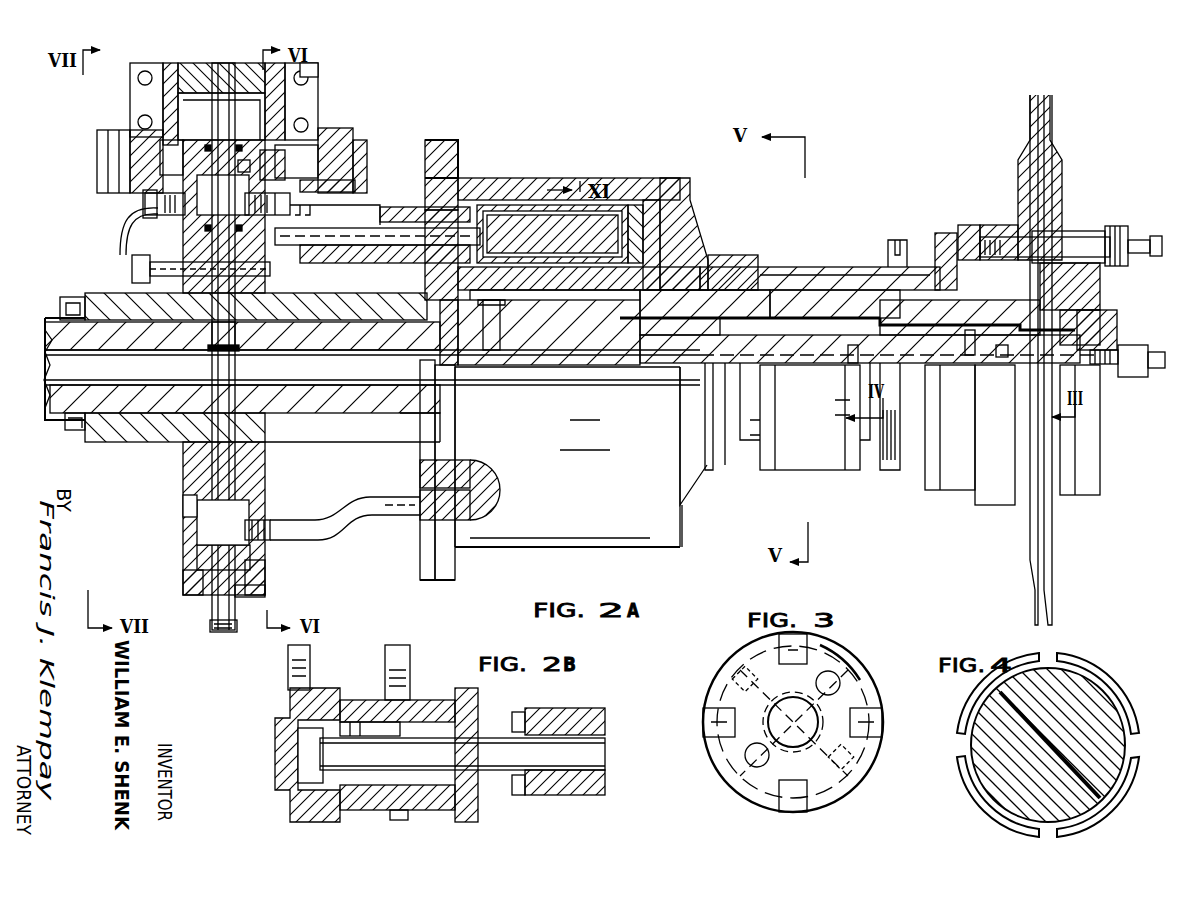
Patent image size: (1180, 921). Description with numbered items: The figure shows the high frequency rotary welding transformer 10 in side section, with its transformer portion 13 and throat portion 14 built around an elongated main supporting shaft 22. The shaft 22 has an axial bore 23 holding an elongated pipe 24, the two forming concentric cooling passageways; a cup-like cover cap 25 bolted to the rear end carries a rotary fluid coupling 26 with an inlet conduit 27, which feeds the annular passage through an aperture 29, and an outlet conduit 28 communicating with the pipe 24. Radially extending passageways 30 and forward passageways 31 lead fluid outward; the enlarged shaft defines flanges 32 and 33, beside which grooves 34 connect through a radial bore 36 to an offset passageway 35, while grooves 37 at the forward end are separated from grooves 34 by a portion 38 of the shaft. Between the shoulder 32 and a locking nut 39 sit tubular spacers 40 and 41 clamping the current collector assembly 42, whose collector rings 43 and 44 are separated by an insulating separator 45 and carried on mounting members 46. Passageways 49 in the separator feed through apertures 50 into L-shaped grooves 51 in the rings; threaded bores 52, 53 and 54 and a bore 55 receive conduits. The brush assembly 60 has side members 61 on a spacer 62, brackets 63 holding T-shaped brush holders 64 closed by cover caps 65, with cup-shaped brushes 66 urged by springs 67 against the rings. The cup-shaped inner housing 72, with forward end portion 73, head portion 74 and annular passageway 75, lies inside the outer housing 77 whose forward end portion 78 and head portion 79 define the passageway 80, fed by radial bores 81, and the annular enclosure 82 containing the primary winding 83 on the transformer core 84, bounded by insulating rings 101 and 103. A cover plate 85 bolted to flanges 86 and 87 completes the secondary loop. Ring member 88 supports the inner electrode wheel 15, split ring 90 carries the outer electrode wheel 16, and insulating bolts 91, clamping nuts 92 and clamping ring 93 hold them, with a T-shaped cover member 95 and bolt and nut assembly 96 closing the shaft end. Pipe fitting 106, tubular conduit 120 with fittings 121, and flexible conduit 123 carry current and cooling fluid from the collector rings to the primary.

In FIG. 2A, the high frequency rotary welding transformer 10 is at (497, 152).
In FIG. 2A, the transformer portion 13 is at (643, 540).
In FIG. 2A, the throat portion 14 is at (787, 427).
In FIG. 2A, the inner welding electrode wheel 15 is at (1036, 99).
In FIG. 2A, the outer welding electrode wheel 16 is at (1048, 119).
In FIG. 2A, the elongated main supporting shaft 22 is at (45, 325).
In FIG. 3, the elongated main supporting shaft 22 is at (835, 661).
In FIG. 4, the elongated main supporting shaft 22 is at (1090, 700).
In FIG. 2A, the axial bore 23 is at (52, 393).
In FIG. 2B, the axial bore 23 is at (593, 772).
In FIG. 2A, the elongated pipe 24 is at (52, 367).
In FIG. 2B, the elongated pipe 24 is at (479, 748).
In FIG. 2B, the cup-like cover cap 25 is at (441, 797).
In FIG. 2B, the rotary fluid coupling 26 is at (411, 702).
In FIG. 2B, the inlet conduit 27 is at (404, 663).
In FIG. 2B, the outlet conduit 28 is at (292, 660).
In FIG. 2B, the aperture 29 is at (375, 700).
In FIG. 2A, the radially extending passageways 30 is at (276, 302).
In FIG. 2A, the radially extending passageways 31 is at (513, 307).
In FIG. 2A, the annular flange 32 is at (497, 305).
In FIG. 2A, the annular flange 33 is at (694, 252).
In FIG. 2A, the longitudinally extending grooves 34 is at (765, 300).
In FIG. 4, the longitudinally extending grooves 34 is at (1047, 662).
In FIG. 2A, the offset passageway 35 is at (1002, 357).
In FIG. 3, the offset passageway 35 is at (845, 684).
In FIG. 2A, the radial bore 36 is at (854, 364).
In FIG. 4, the radial bore 36 is at (1000, 705).
In FIG. 2A, the longitudinally extending grooves 37 is at (970, 356).
In FIG. 3, the longitudinally extending grooves 37 is at (706, 723).
In FIG. 2A, the portion of the supporting shaft 38 is at (890, 245).
In FIG. 2A, the locking nut 39 is at (68, 300).
In FIG. 2A, the tubular spacer 40 is at (348, 432).
In FIG. 2A, the tubular spacer 41 is at (90, 430).
In FIG. 2A, the current collector assembly 42 is at (180, 501).
In FIG. 2A, the current conductive collector ring 43 is at (186, 572).
In FIG. 2A, the current conductive collector ring 44 is at (262, 577).
In FIG. 2A, the annular insulating separator 45 is at (330, 62).
In FIG. 2A, the annular mounting member 46 is at (190, 236).
In FIG. 2A, the radially extending passageways 49 is at (227, 100).
In FIG. 2A, the longitudinally extending through apertures 50 is at (252, 592).
In FIG. 2A, the annular grooves 51 is at (160, 175).
In FIG. 2A, the threaded bore 52 is at (266, 520).
In FIG. 2A, the threaded bore 53 is at (287, 216).
In FIG. 2A, the threaded bore 54 is at (145, 205).
In FIG. 2A, the bore 55 is at (195, 276).
In FIG. 2A, the brush assembly 60 is at (369, 86).
In FIG. 2A, the arcuate side members 61 is at (168, 70).
In FIG. 2A, the arcuate spacer 62 is at (225, 72).
In FIG. 2A, the brush mounting bracket 63 is at (140, 95).
In FIG. 2A, the T-shaped brush holder 64 is at (125, 135).
In FIG. 2A, the cover cap 65 is at (100, 158).
In FIG. 2A, the cup-shaped brush 66 is at (212, 150).
In FIG. 2A, the compression spring 67 is at (362, 165).
In FIG. 2A, the cup-shaped inner housing 72 is at (790, 312).
In FIG. 2A, the elongated forward end portion 73 is at (735, 290).
In FIG. 2A, the enlarged head portion 74 is at (600, 290).
In FIG. 2A, the annular passageway 75 is at (572, 300).
In FIG. 2A, the outer cup-shaped housing 77 is at (684, 522).
In FIG. 2A, the elongated forward end portion 78 is at (835, 285).
In FIG. 2A, the enlarged head portion 79 is at (482, 192).
In FIG. 2A, the annular passageway 80 is at (817, 300).
In FIG. 2A, the radial bores 81 is at (907, 292).
In FIG. 2A, the annular enclosure 82 is at (522, 206).
In FIG. 2A, the primary winding 83 is at (562, 202).
In FIG. 2A, the annular transformer core 84 is at (535, 225).
In FIG. 2A, the annular cover plate 85 is at (428, 566).
In FIG. 2A, the flange 86 is at (447, 160).
In FIG. 2A, the flange 87 is at (455, 322).
In FIG. 2A, the ring member 88 is at (997, 225).
In FIG. 2A, the split ring 90 is at (1090, 278).
In FIG. 2A, the insulating bolts 91 is at (1079, 239).
In FIG. 2A, the clamping nuts 92 is at (1121, 229).
In FIG. 2A, the annular clamping ring 93 is at (969, 225).
In FIG. 2A, the T-shaped annular cover member 95 is at (1114, 320).
In FIG. 2A, the bolt and nut assembly 96 is at (1147, 378).
In FIG. 2A, the ring of insulating material 101 is at (427, 200).
In FIG. 2A, the ring of insulating material 103 is at (655, 202).
In FIG. 2A, the current conductive pipe fitting 106 is at (248, 158).
In FIG. 2A, the tubular current conductive conduit 120 is at (233, 332).
In FIG. 2A, the current conductive pipe fittings 121 is at (120, 226).
In FIG. 2A, the flexible and insulating conduit 123 is at (372, 507).